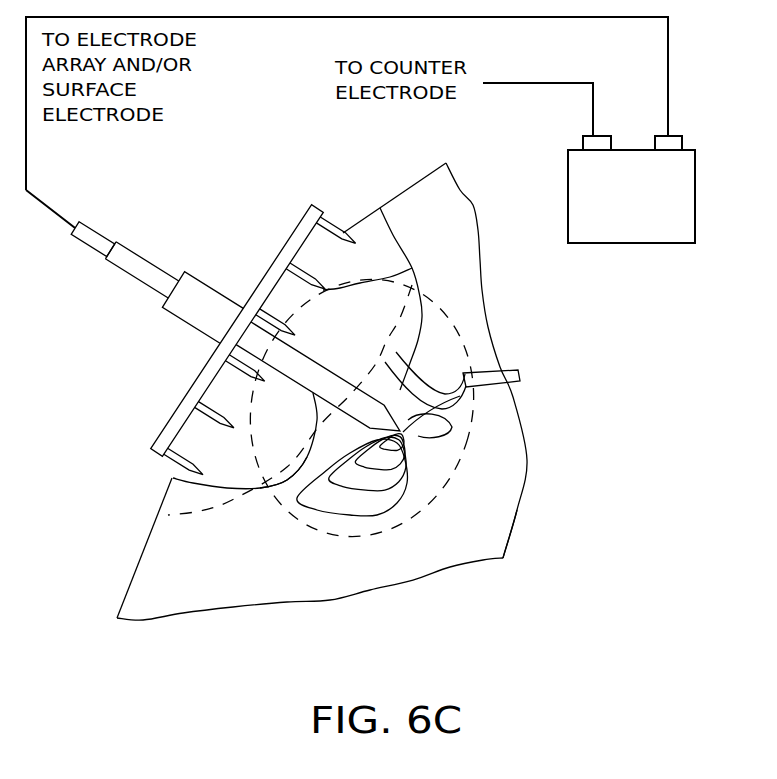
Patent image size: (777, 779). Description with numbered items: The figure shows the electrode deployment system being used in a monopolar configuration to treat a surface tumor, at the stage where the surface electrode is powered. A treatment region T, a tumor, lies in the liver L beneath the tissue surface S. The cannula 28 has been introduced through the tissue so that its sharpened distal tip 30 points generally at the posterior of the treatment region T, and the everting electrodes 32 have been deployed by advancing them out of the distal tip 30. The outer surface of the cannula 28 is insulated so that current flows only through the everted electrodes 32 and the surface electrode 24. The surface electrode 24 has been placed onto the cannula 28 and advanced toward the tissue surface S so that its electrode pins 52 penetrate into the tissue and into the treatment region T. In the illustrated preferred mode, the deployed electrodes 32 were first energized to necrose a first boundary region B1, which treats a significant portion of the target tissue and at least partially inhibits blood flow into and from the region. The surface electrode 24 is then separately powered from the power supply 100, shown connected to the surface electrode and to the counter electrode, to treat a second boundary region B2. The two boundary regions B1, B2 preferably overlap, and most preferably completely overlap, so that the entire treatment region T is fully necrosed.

The surface electrode 24 is at (294, 231).
The electrode pins 52 is at (323, 290).
The sharpened distal tip 30 is at (452, 428).
The everting electrodes 32 is at (508, 371).
The cannula 28 is at (292, 462).
The power supply 100 is at (657, 235).
The treatment region T is at (403, 273).
The tissue surface S is at (144, 551).
The liver L is at (514, 514).
The first boundary region B1 is at (330, 537).
The second boundary region B2 is at (412, 242).